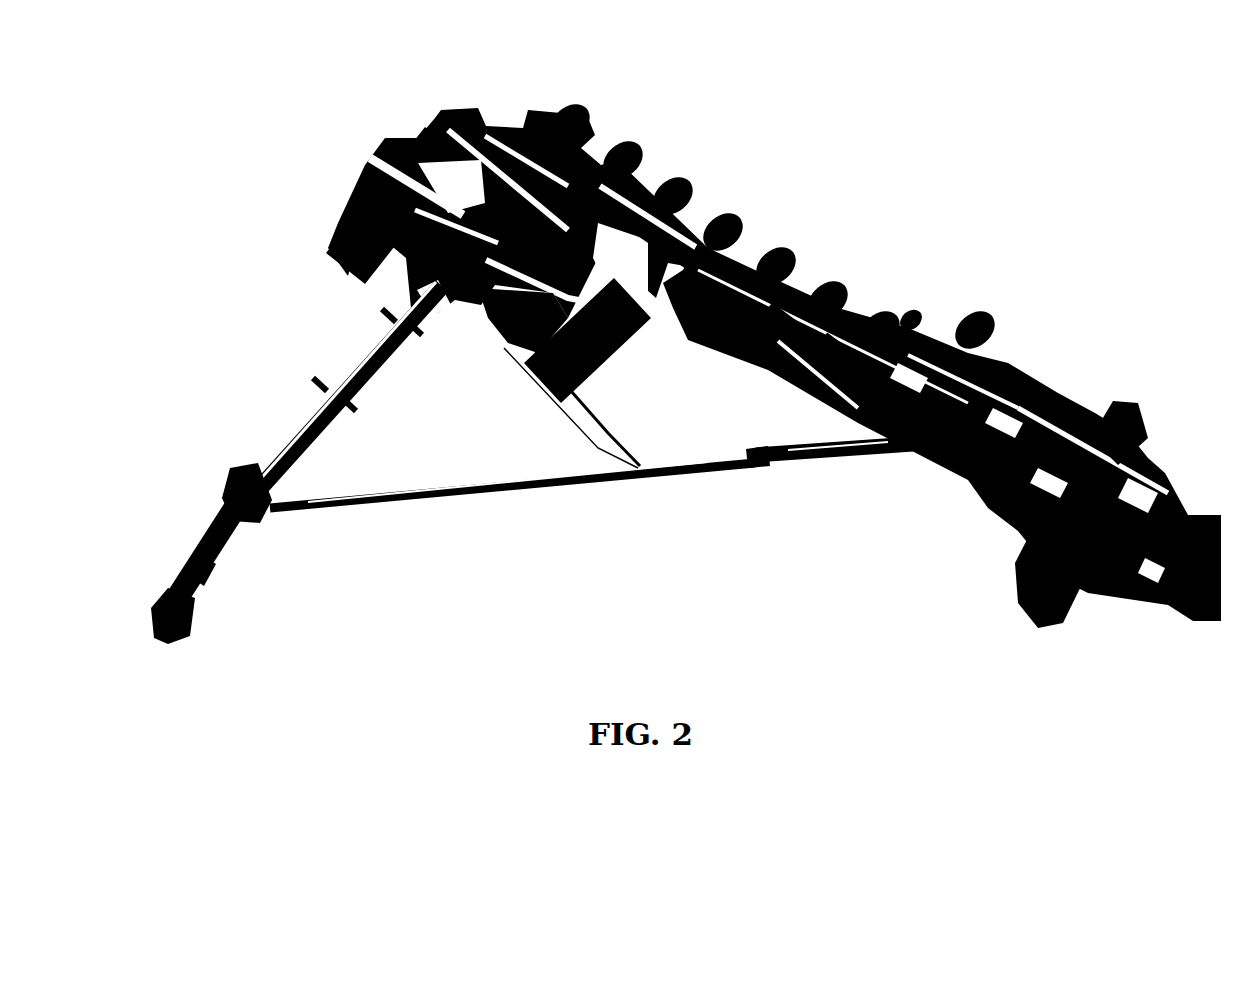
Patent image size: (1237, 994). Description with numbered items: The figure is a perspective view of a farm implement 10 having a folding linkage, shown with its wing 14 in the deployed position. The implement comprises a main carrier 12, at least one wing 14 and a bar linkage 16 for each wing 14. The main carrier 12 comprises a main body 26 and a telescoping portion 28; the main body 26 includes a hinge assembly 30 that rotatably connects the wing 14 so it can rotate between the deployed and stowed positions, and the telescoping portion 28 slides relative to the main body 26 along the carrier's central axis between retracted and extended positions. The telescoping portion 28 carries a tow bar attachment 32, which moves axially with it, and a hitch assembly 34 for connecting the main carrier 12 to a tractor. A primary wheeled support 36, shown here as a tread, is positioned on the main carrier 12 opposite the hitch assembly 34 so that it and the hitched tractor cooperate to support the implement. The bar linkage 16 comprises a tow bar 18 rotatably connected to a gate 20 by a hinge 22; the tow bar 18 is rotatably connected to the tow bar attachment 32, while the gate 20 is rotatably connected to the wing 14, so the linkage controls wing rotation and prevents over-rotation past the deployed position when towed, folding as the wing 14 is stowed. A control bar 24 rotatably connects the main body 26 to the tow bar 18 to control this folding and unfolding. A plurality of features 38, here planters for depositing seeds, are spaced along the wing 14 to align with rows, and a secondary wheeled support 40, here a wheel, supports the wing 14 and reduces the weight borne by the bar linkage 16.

The farm implement 10 is at (316, 105).
The main carrier 12 is at (347, 352).
The wing 14 is at (860, 282).
The bar linkage 16 is at (613, 487).
The tow bar 18 is at (457, 497).
The gate 20 is at (802, 458).
The hinge 22 is at (757, 463).
The control bar 24 is at (615, 428).
The main body 26 is at (305, 408).
The telescoping portion 28 is at (215, 515).
The hinge assembly 30 is at (556, 198).
The tow bar attachment 32 is at (240, 513).
The hitch assembly 34 is at (173, 623).
The primary wheeled support 36 is at (345, 218).
The features 38 is at (773, 247).
The secondary wheeled support 40 is at (1128, 402).